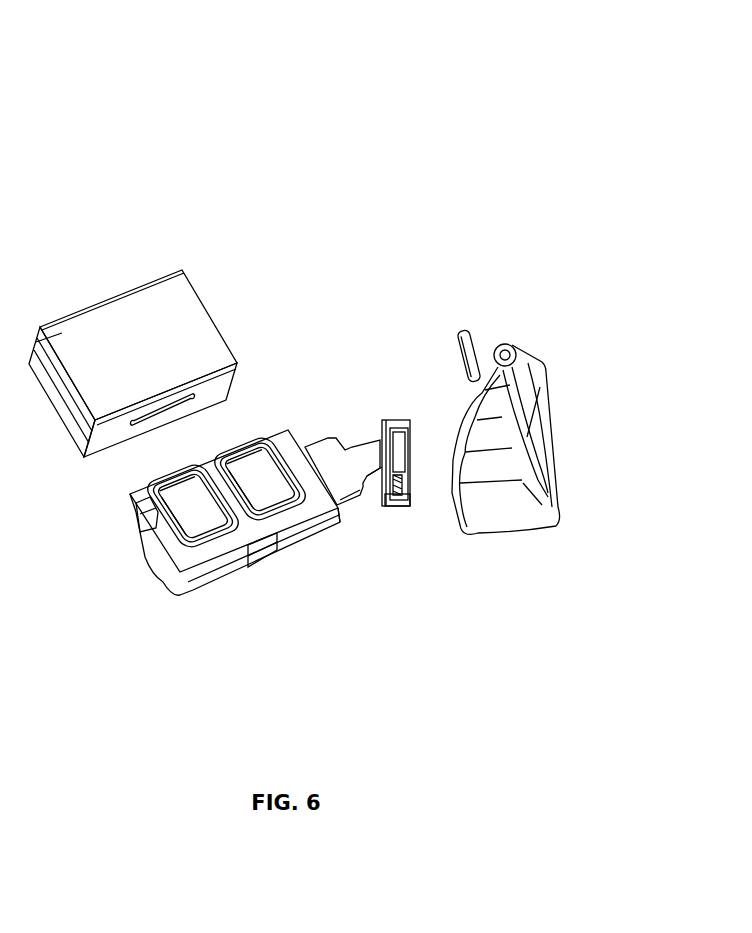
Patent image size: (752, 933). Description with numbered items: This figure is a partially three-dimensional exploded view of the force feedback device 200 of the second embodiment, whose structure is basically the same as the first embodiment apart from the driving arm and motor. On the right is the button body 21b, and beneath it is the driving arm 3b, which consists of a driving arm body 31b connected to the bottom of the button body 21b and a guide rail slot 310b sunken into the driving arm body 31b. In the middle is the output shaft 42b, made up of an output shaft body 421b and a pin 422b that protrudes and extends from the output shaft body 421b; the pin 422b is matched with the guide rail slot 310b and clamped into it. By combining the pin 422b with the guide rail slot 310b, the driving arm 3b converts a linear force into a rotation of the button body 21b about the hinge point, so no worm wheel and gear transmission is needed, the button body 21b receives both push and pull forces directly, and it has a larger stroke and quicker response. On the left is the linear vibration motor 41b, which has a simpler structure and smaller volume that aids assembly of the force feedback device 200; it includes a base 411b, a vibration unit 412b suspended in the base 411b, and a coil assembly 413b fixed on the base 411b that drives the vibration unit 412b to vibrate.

The force feedback device 200 is at (302, 45).
The button body 21b is at (545, 368).
The driving arm 3b is at (352, 617).
The driving arm body 31b is at (410, 468).
The guide rail slot 310b is at (395, 506).
The linear vibration motor 41b is at (75, 677).
The base 411b is at (107, 434).
The vibration unit 412b is at (248, 568).
The coil assembly 413b is at (143, 516).
The output shaft 42b is at (328, 285).
The output shaft body 421b is at (345, 450).
The pin 422b is at (400, 422).